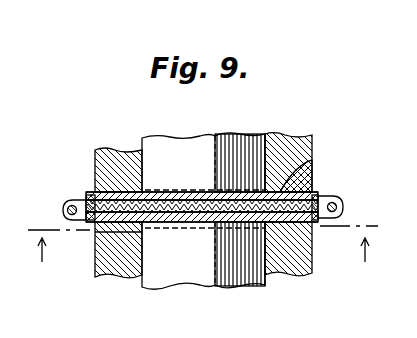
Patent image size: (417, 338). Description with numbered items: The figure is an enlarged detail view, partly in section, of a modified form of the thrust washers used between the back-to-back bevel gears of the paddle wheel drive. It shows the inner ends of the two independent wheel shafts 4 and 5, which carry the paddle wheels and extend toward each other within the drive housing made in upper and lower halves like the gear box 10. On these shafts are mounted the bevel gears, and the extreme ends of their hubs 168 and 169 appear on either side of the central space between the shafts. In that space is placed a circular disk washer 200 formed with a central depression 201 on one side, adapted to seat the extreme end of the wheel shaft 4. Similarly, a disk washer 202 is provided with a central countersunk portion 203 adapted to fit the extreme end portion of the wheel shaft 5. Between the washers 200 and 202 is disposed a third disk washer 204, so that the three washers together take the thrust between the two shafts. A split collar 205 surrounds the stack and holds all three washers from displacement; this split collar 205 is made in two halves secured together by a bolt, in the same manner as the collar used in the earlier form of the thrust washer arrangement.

The wheel shaft 4 is at (207, 137).
The wheel shaft 5 is at (210, 273).
The gear box 10 is at (202, 240).
The hub 168 is at (112, 155).
The hub 169 is at (100, 277).
The circular disk washer 200 is at (312, 170).
The central depression 201 is at (312, 153).
The disk washer 202 is at (312, 247).
The central countersunk portion 203 is at (95, 252).
The third disk washer 204 is at (95, 182).
The split collar 205 is at (87, 197).